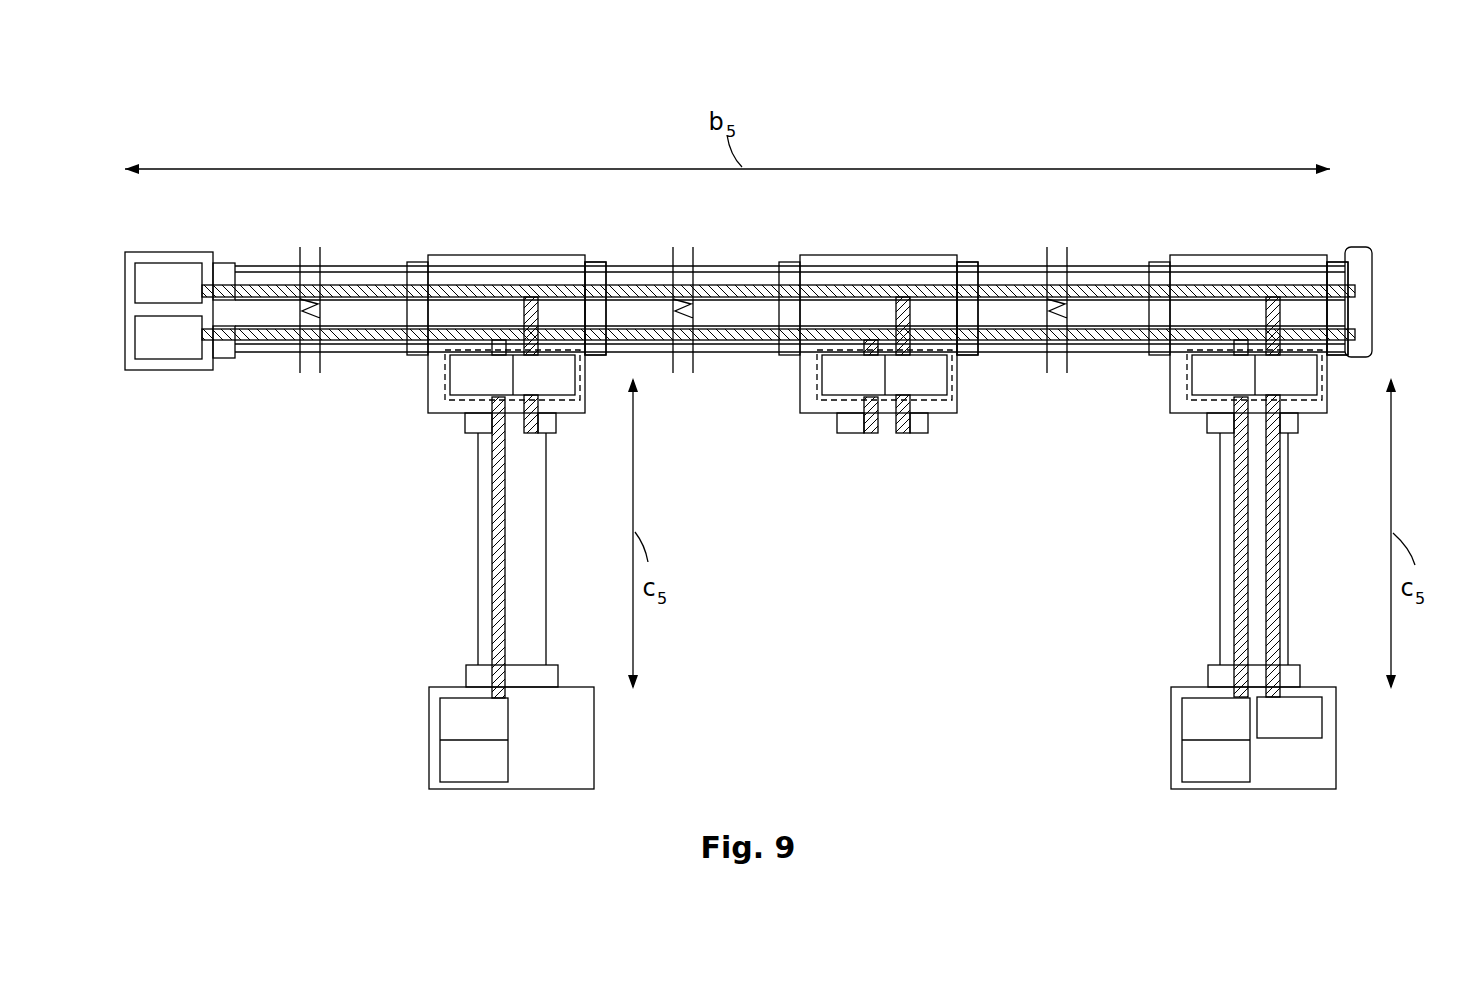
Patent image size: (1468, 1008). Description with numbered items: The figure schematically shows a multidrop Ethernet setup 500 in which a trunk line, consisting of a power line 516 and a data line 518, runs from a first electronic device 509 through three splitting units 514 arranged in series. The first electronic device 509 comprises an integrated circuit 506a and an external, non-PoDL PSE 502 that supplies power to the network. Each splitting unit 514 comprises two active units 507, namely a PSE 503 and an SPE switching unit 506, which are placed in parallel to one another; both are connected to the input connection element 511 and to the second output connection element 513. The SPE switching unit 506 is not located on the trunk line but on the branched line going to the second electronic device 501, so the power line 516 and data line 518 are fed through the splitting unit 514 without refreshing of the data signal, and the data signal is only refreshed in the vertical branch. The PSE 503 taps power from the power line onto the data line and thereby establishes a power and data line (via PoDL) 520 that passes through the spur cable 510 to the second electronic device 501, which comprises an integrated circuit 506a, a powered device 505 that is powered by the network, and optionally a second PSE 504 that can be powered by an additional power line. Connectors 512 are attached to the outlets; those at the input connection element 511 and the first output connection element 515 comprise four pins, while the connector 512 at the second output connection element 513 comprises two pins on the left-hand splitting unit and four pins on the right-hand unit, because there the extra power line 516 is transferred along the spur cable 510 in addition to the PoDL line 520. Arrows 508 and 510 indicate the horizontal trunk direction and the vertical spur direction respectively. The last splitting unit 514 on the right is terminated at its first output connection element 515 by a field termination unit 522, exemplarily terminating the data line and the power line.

The multidrop Ethernet setup 500 is at (166, 90).
The second electronic device 501 is at (430, 690).
The external PSE 502 is at (190, 270).
The PSE 503 is at (552, 392).
The second PSE 504 is at (1312, 720).
The powered device 505 is at (448, 766).
The SPE switching unit 506 is at (470, 390).
The integrated circuit 506a is at (162, 348).
The active unit 507 is at (442, 382).
The horizontal direction 508 is at (330, 360).
The first electronic device 509 is at (142, 258).
The spur cable 510 is at (468, 601).
The input connection element 511 is at (414, 352).
The connector 512 is at (413, 268).
The second output connection element 513 is at (478, 420).
The splitting unit 514 is at (508, 260).
The first output connection element 515 is at (1337, 268).
The power line 516 is at (285, 288).
The data line 518 is at (263, 338).
The power and data line (via PoDL) 520 is at (495, 532).
The field termination unit 522 is at (1372, 268).